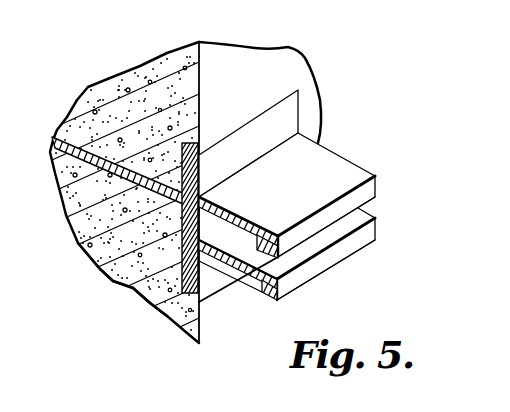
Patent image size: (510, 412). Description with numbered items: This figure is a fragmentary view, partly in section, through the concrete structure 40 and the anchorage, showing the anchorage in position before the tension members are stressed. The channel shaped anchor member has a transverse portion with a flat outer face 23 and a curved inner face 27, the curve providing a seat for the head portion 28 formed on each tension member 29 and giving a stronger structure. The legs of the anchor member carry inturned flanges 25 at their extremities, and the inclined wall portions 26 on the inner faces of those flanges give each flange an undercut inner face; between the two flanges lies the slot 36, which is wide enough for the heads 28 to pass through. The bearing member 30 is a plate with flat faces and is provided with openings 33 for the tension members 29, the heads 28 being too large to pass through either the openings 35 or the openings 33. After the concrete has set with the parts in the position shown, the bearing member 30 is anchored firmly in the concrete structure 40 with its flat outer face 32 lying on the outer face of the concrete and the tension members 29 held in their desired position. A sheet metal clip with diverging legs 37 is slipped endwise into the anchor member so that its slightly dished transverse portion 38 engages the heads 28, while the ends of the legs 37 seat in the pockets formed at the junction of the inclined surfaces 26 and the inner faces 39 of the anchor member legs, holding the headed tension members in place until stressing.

The flat outer face 23 is at (206, 192).
The inturned flanges 25 is at (374, 191).
The inclined wall portions 26 is at (293, 228).
The curved inner face 27 is at (205, 252).
The head portion 28 is at (227, 206).
The tension member 29 is at (62, 147).
The bearing member 30 is at (200, 157).
The flat outer face 32 is at (287, 108).
The openings 33 is at (112, 272).
The openings 35 is at (149, 299).
The slot 36 is at (377, 212).
The diverging legs 37 is at (262, 219).
The transverse portion 38 is at (255, 213).
The inner faces 39 is at (227, 257).
The concrete structure 40 is at (256, 63).